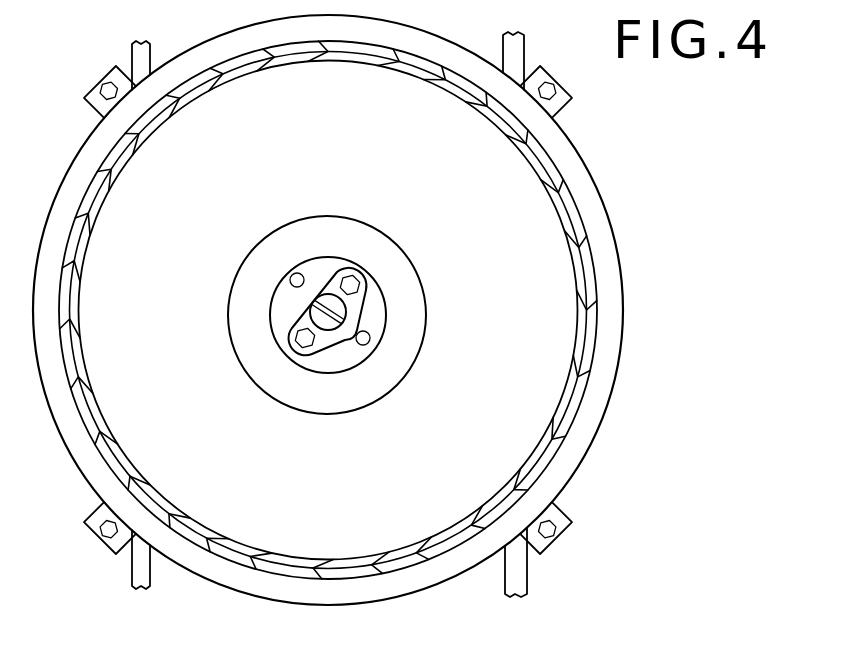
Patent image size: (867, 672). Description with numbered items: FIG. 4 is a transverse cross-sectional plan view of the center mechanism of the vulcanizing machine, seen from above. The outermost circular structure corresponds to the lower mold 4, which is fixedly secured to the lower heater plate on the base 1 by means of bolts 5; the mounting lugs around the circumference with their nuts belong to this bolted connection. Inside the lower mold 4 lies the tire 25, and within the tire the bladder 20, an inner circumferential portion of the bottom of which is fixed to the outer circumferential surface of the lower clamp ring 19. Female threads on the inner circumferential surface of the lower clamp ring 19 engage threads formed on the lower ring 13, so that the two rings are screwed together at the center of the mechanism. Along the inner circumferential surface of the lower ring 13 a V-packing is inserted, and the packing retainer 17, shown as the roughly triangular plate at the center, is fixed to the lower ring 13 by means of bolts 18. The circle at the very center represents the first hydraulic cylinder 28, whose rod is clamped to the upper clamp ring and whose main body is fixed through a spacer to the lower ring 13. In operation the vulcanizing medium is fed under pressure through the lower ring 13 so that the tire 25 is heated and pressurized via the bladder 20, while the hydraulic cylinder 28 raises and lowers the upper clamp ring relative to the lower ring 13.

The base 1 is at (557, 46).
The lower mold 4 is at (589, 453).
The bolts 5 is at (552, 546).
The lower ring 13 is at (313, 360).
The packing retainer 17 is at (336, 286).
The bolts 18 is at (353, 282).
The lower clamp ring 19 is at (413, 343).
The bladder 20 is at (578, 296).
The tire 25 is at (580, 240).
The first hydraulic cylinder 28 is at (350, 322).